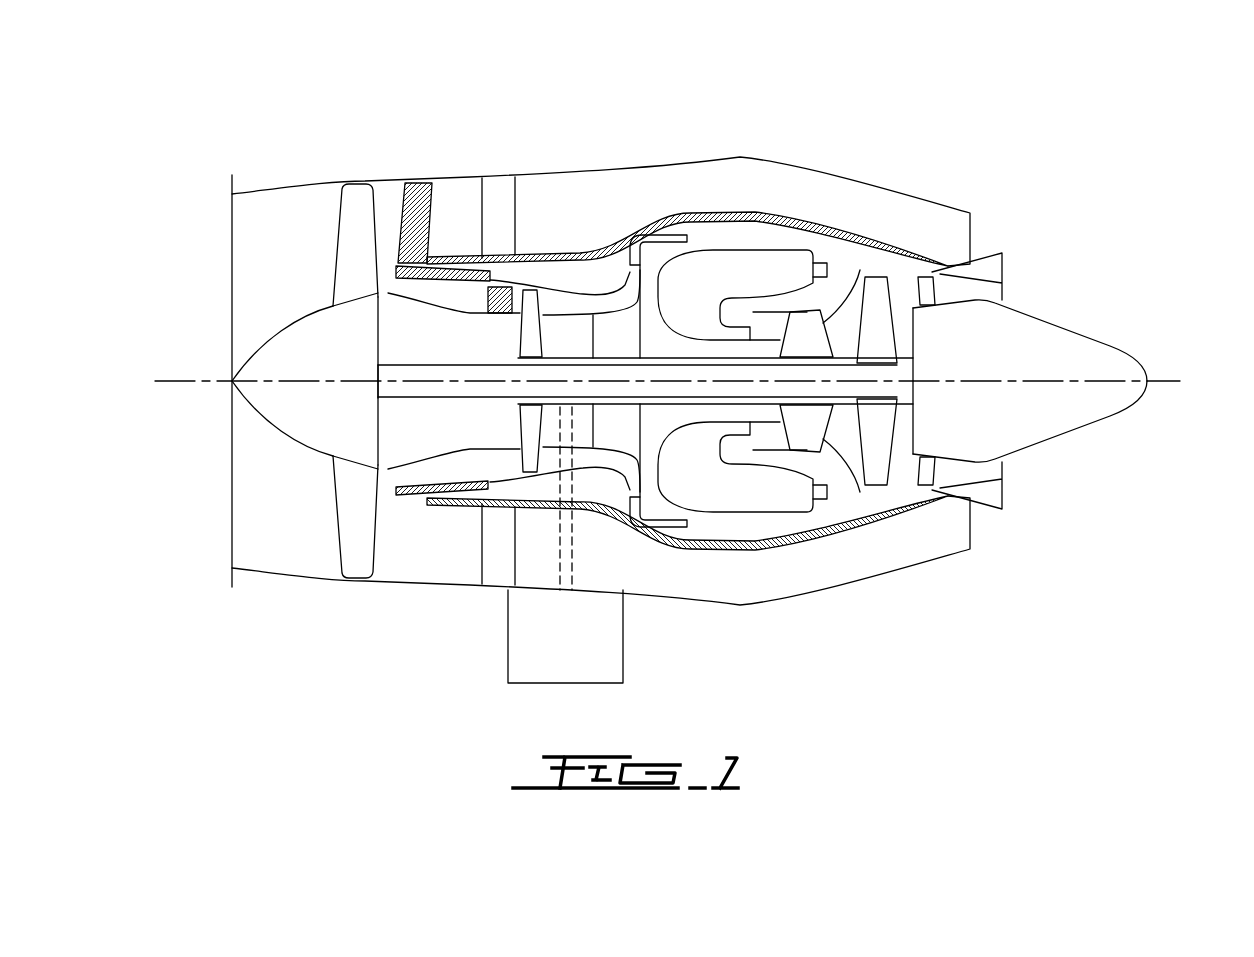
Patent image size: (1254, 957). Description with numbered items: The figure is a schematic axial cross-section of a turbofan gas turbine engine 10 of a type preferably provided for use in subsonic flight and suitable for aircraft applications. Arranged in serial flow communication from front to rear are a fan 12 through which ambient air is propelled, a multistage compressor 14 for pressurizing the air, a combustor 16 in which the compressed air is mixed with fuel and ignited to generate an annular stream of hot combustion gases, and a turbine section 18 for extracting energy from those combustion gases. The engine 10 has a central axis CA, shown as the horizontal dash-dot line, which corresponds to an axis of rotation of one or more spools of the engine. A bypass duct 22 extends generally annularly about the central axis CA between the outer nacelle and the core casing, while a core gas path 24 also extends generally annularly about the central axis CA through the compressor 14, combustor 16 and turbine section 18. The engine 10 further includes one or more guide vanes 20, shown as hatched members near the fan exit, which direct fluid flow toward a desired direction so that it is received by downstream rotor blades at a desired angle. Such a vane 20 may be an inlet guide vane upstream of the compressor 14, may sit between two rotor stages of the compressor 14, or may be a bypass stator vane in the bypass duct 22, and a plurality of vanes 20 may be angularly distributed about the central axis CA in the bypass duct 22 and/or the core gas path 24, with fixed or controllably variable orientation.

The gas turbine engine 10 is at (882, 120).
The fan 12 is at (355, 508).
The multistage compressor 14 is at (580, 307).
The combustor 16 is at (733, 277).
The turbine section 18 is at (843, 433).
The guide vane 20 is at (500, 285).
The bypass duct 22 is at (645, 192).
The core gas path 24 is at (442, 293).
The central axis CA is at (173, 378).